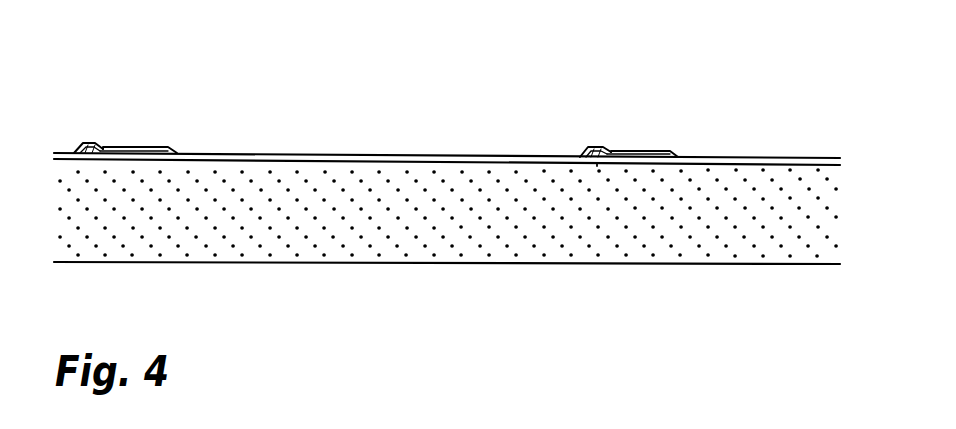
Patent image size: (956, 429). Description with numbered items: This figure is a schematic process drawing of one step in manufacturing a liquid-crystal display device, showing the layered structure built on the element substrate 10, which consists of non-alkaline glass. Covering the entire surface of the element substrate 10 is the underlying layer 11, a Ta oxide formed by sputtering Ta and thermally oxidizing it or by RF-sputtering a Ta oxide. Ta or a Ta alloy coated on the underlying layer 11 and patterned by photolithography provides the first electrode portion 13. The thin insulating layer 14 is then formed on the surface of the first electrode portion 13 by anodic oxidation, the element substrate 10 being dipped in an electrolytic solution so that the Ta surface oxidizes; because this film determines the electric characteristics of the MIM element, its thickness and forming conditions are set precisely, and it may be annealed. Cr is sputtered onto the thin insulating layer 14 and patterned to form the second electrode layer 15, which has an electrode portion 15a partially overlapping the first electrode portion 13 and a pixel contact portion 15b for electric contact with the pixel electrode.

The element substrate 10 is at (336, 265).
The underlying layer 11 is at (411, 153).
The first electrode portion 13 is at (597, 164).
The thin insulating layer 14 is at (88, 144).
The second electrode layer 15 is at (128, 147).
The electrode portion 15a is at (590, 146).
The pixel contact portion 15b is at (647, 148).